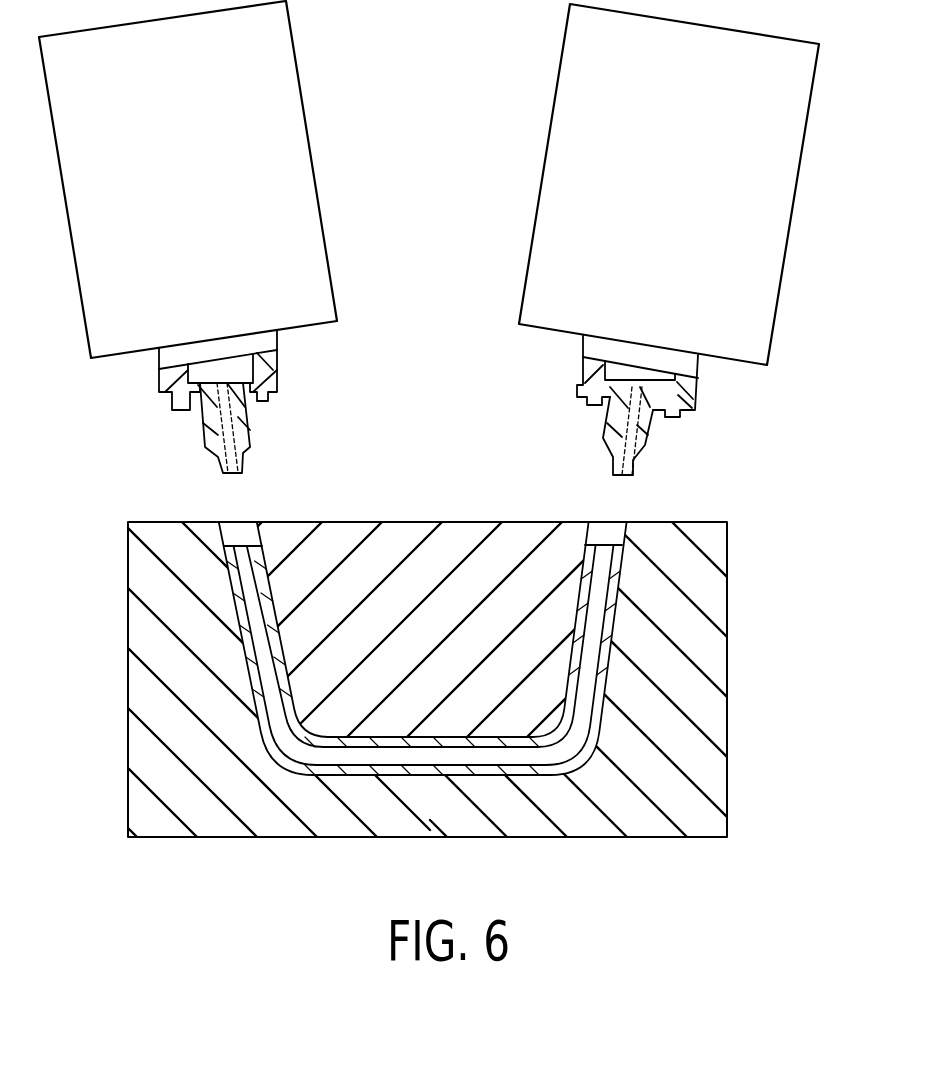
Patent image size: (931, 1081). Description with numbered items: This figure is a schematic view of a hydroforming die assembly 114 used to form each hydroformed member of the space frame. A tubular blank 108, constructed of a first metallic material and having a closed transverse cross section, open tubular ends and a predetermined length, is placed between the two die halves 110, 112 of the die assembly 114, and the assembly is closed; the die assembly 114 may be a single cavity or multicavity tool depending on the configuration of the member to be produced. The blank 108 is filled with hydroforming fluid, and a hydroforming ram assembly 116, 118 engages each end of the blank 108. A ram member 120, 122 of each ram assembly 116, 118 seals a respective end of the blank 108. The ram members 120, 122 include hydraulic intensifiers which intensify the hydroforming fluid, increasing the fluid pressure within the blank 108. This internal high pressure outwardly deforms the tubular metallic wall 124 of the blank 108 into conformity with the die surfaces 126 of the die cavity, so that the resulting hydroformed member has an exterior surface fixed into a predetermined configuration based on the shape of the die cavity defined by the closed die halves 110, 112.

The tubular blank 108 is at (525, 620).
The die half 110 is at (398, 537).
The die half 112 is at (715, 700).
The die assembly 114 is at (112, 733).
The hydroforming ram assembly 116 is at (297, 258).
The hydroforming ram assembly 118 is at (758, 288).
The ram member 120 is at (252, 457).
The ram member 122 is at (635, 472).
The tubular metallic wall 124 is at (613, 603).
The die surfaces 126 is at (598, 530).